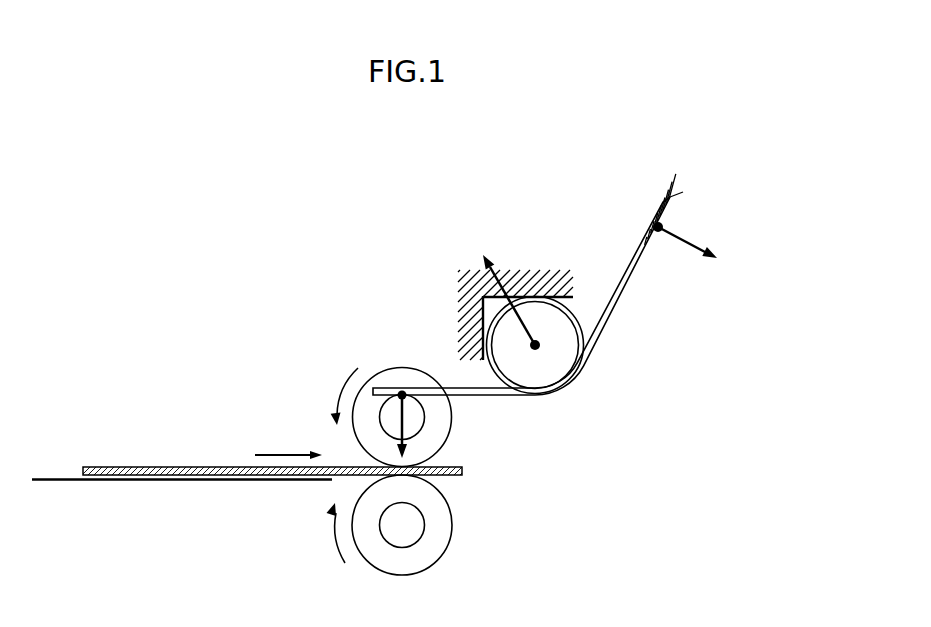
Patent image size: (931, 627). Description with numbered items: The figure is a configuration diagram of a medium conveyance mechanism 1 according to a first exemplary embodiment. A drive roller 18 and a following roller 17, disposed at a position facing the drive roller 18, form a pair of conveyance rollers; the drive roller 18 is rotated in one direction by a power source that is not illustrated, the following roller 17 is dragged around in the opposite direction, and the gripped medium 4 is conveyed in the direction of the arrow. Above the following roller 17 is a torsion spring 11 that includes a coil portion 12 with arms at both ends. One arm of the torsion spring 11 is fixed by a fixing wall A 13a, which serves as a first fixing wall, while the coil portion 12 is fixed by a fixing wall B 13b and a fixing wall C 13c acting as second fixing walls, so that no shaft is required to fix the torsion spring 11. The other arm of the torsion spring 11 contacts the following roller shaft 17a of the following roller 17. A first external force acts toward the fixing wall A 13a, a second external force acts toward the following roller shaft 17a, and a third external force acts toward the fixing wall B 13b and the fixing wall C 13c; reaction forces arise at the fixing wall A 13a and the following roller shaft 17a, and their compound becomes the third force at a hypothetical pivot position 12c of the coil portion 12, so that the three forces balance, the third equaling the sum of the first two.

The medium conveyance mechanism 1 is at (504, 360).
The medium 4 is at (178, 467).
The torsion spring 11 is at (645, 313).
The coil portion 12 is at (571, 370).
The hypothetical pivot position 12c is at (537, 352).
The fixing wall A 13a is at (697, 207).
The fixing wall B 13b is at (477, 310).
The fixing wall C 13c is at (540, 278).
The following roller 17 is at (435, 421).
The following roller shaft 17a is at (415, 425).
The drive roller 18 is at (442, 533).